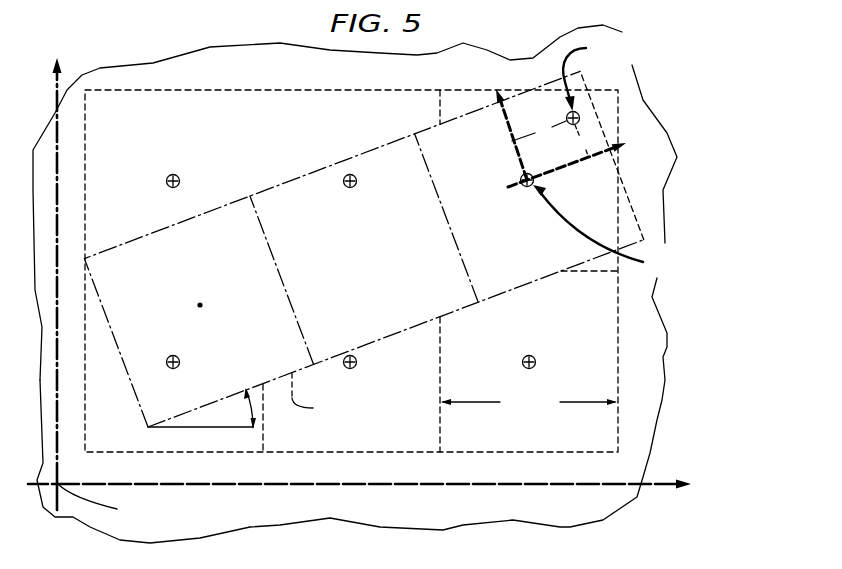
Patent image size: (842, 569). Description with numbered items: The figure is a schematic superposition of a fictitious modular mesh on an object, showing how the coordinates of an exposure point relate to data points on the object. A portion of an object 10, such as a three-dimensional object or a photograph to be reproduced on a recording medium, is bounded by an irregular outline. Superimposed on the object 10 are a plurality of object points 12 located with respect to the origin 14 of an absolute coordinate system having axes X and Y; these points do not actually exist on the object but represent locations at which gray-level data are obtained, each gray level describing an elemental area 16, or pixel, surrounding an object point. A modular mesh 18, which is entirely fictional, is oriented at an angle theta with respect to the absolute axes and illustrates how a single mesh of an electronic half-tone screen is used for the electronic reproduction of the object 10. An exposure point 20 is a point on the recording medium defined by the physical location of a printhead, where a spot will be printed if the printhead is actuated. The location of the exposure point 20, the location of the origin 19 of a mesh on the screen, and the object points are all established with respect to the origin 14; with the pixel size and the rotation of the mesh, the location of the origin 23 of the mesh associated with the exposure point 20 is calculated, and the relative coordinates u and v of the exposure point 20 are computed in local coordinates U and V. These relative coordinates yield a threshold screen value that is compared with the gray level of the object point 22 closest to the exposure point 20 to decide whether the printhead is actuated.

The object 10 is at (648, 384).
The object points 12 is at (175, 173).
The origin 14 is at (57, 484).
The elemental area 16 is at (619, 362).
The modular mesh 18 is at (351, 157).
The origin of a mesh 19 is at (200, 305).
The exposure point 20 is at (571, 111).
The object point 22 is at (528, 190).
The origin of the mesh 23 is at (521, 177).